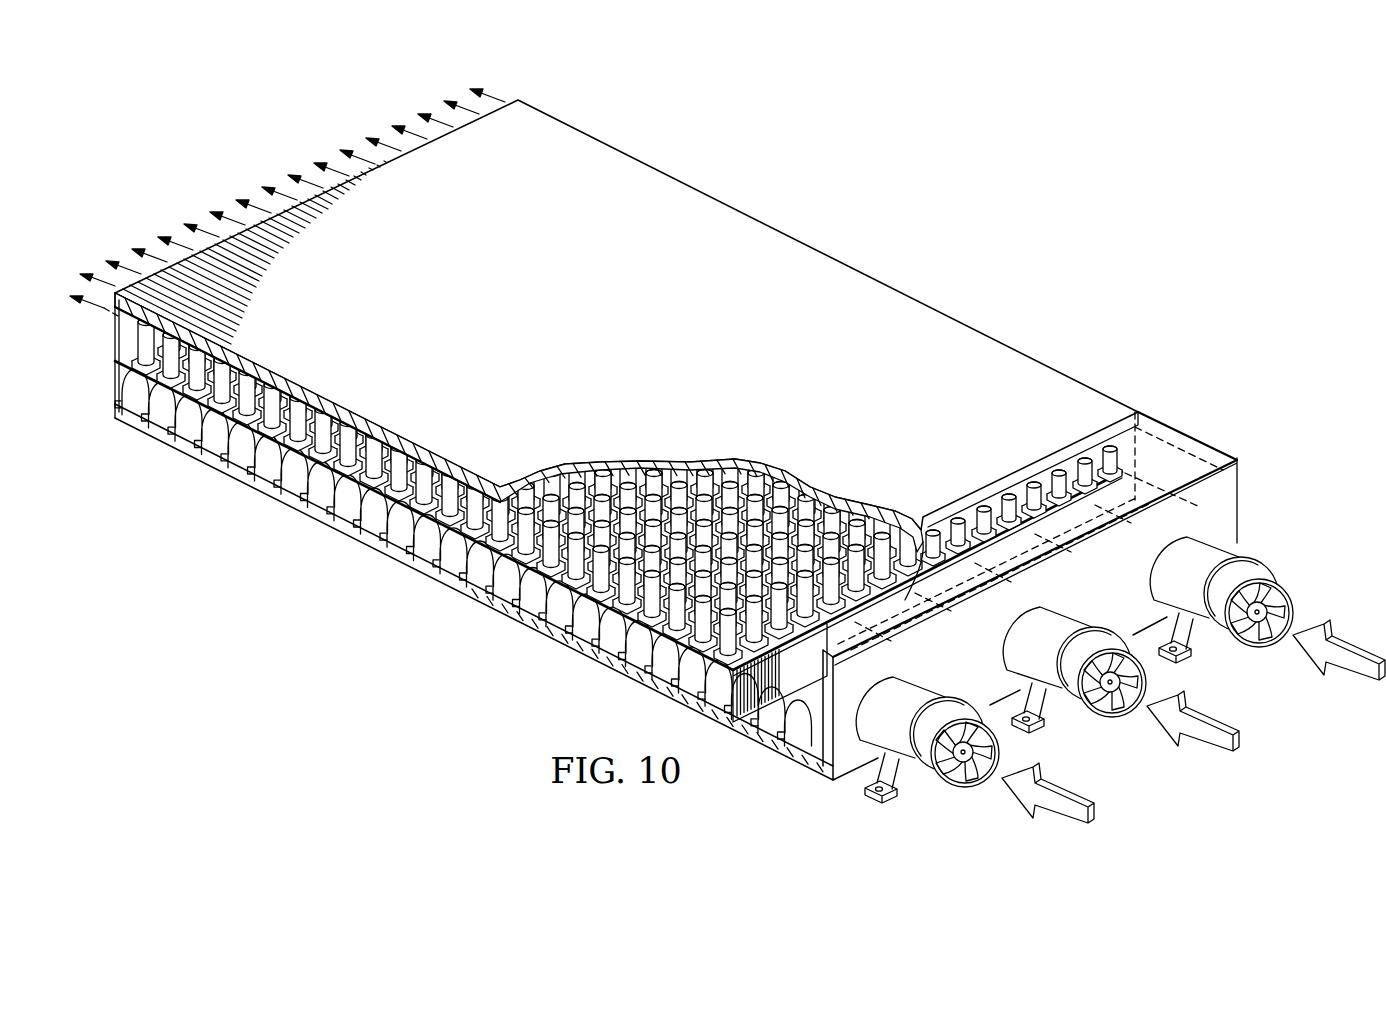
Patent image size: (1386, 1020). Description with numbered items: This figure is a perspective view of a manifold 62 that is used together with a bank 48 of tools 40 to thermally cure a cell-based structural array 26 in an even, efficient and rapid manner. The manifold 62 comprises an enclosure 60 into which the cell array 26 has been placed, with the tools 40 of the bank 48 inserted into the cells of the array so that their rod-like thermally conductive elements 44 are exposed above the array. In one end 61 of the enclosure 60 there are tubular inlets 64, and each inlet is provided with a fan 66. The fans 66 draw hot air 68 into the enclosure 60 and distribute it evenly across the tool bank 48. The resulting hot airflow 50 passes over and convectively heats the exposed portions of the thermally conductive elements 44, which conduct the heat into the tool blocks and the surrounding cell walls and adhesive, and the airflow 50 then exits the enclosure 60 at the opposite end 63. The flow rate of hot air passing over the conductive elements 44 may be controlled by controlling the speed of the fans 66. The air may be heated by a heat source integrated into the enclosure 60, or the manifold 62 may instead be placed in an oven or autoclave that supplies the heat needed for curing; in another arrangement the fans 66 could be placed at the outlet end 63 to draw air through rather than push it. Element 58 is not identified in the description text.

The cell-based structural array 26 is at (404, 534).
The tool 40 is at (697, 680).
The thermally conductive element 44 is at (655, 620).
The bank of tools 48 is at (494, 552).
The hot airflow 50 is at (258, 206).
The pin bases 58 is at (577, 550).
The enclosure 60 is at (820, 265).
The end of the enclosure 61 is at (849, 781).
The manifold 62 is at (1225, 491).
The opposite end 63 is at (102, 380).
The tubular inlet 64 is at (914, 684).
The fan 66 is at (976, 790).
The hot air 68 is at (1073, 817).